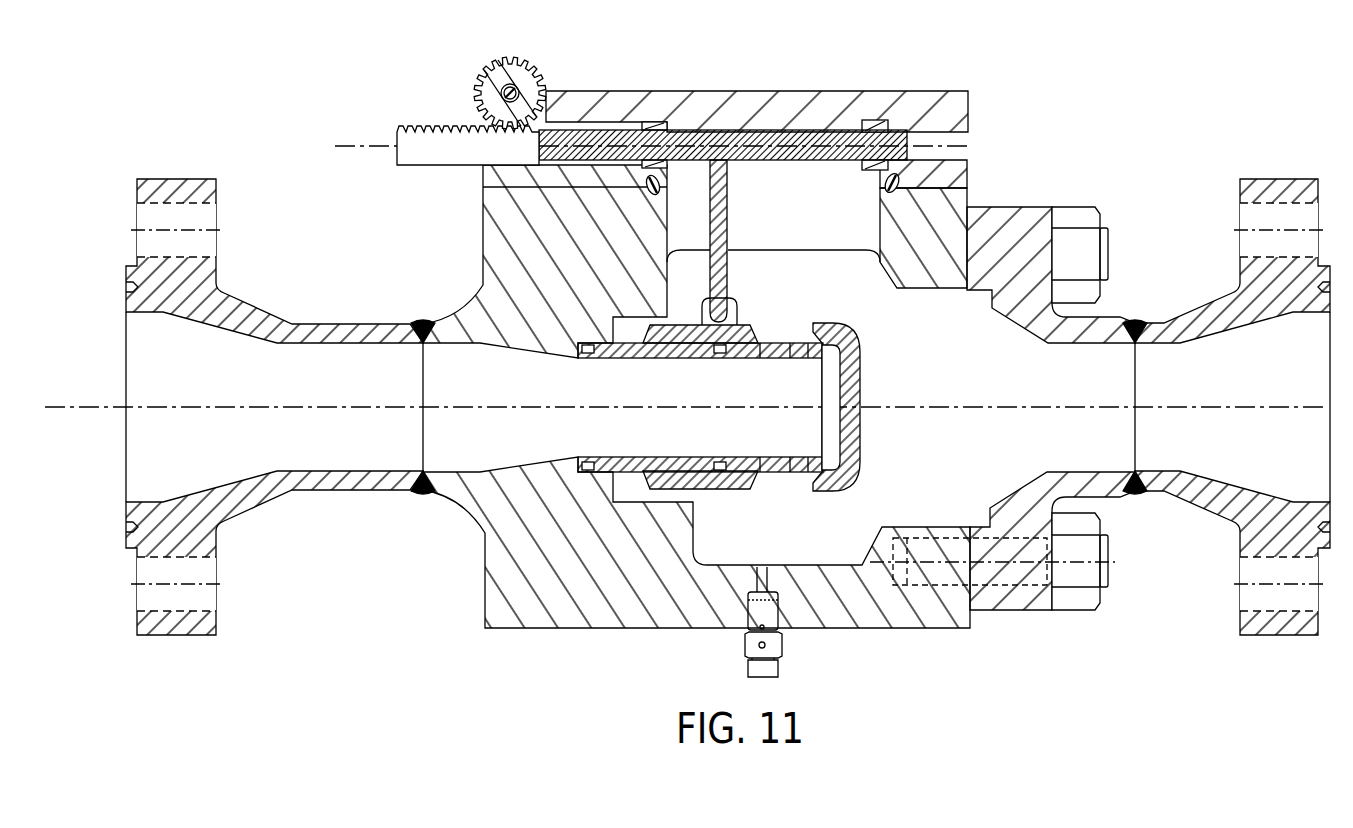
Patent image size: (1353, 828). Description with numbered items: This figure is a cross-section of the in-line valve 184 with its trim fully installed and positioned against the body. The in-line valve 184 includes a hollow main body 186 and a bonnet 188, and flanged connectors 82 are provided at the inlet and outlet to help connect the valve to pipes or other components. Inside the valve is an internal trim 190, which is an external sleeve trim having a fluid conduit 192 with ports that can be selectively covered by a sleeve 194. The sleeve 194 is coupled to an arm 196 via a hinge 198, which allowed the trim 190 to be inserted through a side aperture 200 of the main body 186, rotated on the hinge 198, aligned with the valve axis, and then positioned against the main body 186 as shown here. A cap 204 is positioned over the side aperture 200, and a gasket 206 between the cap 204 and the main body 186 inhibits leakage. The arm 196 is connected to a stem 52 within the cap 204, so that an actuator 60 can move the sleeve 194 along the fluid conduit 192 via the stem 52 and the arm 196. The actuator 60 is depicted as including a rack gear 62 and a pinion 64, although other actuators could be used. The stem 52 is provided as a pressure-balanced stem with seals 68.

The in-line valve 184 is at (326, 115).
The actuator 60 is at (423, 80).
The rack gear 62 is at (431, 125).
The pinion 64 is at (528, 66).
The gasket 206 is at (645, 183).
The seals 68 is at (658, 124).
The cap 204 is at (748, 91).
The stem 52 is at (915, 135).
The bonnet 188 is at (1012, 207).
The arm 196 is at (728, 232).
The side aperture 200 is at (880, 228).
The hinge 198 is at (737, 306).
The internal trim 190 is at (874, 354).
The fluid conduit 192 is at (650, 360).
The sleeve 194 is at (728, 492).
The main body 186 is at (580, 630).
The flanged connectors 82 is at (257, 503).